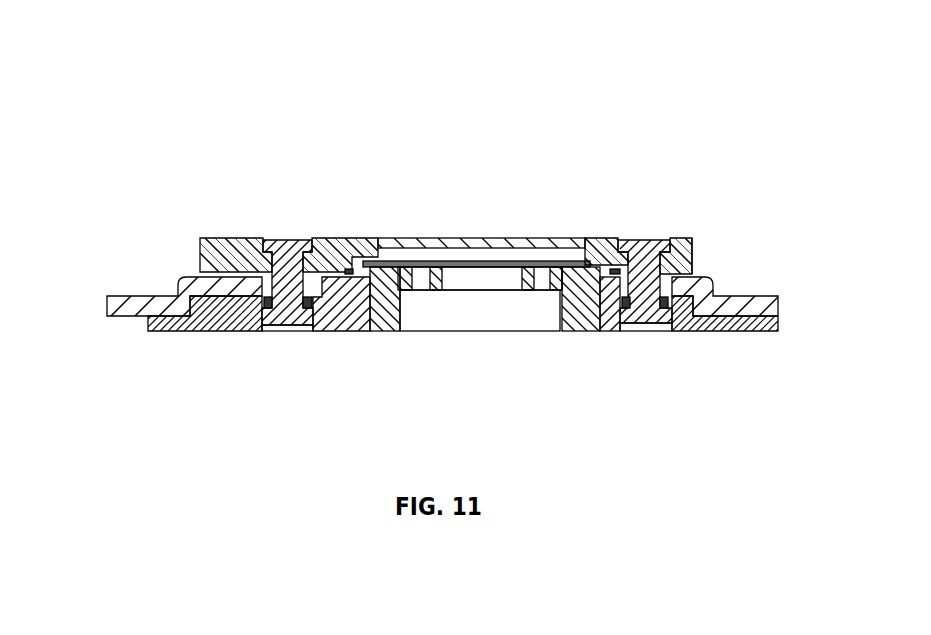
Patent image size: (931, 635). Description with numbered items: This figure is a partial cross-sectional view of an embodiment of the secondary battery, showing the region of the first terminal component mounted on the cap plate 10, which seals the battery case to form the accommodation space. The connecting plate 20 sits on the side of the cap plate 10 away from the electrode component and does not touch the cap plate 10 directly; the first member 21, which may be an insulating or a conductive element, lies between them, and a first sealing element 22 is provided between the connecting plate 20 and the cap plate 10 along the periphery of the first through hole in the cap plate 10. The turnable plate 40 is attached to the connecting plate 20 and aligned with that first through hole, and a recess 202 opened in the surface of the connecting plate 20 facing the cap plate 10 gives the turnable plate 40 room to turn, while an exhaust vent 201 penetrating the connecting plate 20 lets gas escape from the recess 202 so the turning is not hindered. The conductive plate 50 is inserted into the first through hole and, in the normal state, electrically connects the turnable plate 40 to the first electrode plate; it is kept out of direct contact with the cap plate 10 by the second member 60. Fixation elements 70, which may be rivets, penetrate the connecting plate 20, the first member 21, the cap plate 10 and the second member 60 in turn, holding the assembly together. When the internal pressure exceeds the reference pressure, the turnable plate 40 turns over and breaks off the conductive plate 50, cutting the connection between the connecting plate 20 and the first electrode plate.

The cap plate 10 is at (157, 296).
The connecting plate 20 is at (551, 238).
The first member 21 is at (708, 272).
The first sealing element 22 is at (347, 306).
The turnable plate 40 is at (382, 242).
The conductive plate 50 is at (577, 310).
The second member 60 is at (222, 318).
The fixation element 70 is at (640, 305).
The exhaust vent 201 is at (482, 238).
The recess 202 is at (520, 240).